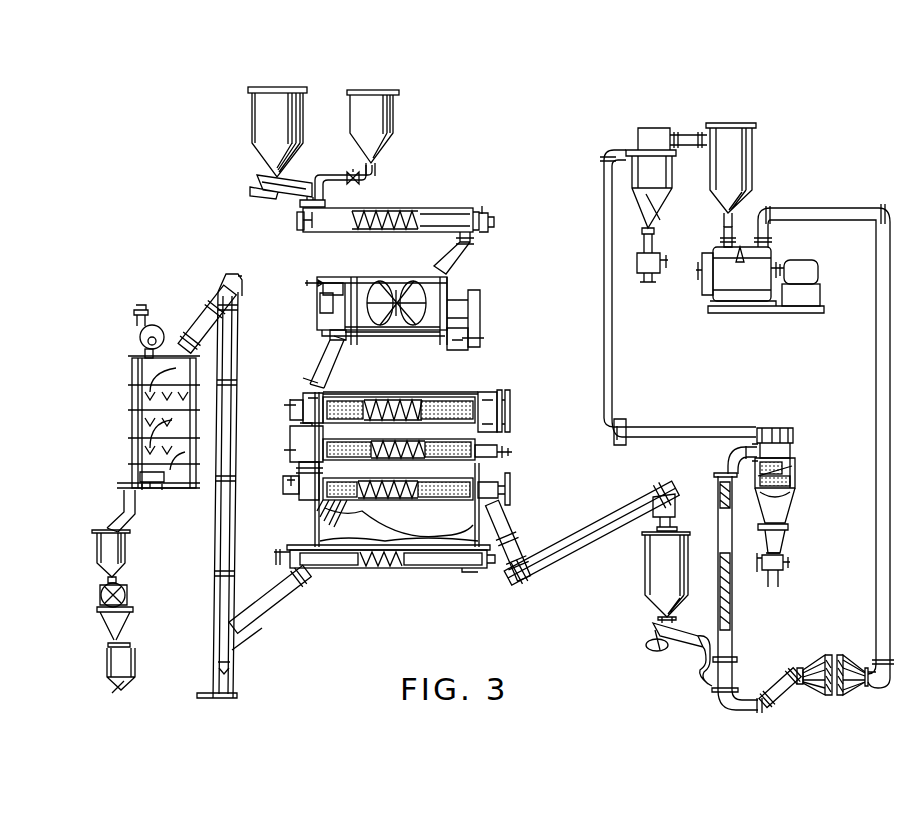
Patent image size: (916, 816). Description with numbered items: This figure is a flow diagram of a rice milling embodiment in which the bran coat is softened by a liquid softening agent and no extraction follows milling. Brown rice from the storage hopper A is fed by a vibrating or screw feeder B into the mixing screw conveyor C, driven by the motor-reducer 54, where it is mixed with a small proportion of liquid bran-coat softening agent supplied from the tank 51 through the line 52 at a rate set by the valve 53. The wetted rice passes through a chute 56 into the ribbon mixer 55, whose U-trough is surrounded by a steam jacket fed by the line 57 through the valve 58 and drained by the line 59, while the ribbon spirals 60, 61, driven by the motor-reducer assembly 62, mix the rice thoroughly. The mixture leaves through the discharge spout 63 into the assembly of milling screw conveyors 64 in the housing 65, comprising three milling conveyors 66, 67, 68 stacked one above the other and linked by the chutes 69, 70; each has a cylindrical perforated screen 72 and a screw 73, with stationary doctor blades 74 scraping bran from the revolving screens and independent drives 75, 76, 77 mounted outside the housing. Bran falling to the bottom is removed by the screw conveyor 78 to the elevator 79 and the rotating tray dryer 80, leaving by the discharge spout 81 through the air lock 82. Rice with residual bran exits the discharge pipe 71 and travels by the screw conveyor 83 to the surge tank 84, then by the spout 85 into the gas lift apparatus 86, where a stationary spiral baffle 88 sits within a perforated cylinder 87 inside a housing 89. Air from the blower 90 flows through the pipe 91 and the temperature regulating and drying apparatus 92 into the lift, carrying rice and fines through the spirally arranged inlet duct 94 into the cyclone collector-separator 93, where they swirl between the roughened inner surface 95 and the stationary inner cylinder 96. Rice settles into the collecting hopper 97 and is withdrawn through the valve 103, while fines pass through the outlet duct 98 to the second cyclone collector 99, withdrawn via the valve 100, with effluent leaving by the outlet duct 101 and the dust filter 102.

The storage hopper A is at (251, 122).
The vibrating or screw feeder B is at (315, 180).
The mixing screw conveyor C is at (323, 228).
The tank 51 is at (428, 108).
The line 52 is at (343, 172).
The valve 53 is at (350, 182).
The motor-reducer 54 is at (492, 214).
The ribbon mixer 55 is at (411, 330).
The chute 56 is at (463, 252).
The line 57 is at (306, 283).
The valve 58 is at (334, 254).
The line 59 is at (448, 343).
The ribbon spiral 60 is at (386, 278).
The ribbon spiral 61 is at (421, 280).
The motor-reducer assembly 62 is at (480, 338).
The discharge spout 63 is at (326, 358).
The assembly of milling screw conveyors 64 is at (440, 398).
The housing 65 is at (414, 392).
The milling conveyor 66 is at (304, 378).
The milling conveyor 67 is at (287, 406).
The milling conveyor 68 is at (303, 505).
The chute 69 is at (512, 452).
The chute 70 is at (300, 467).
The discharge pipe 71 is at (512, 527).
The cylindrical perforated screen 72 is at (478, 436).
The screw 73 is at (508, 426).
The doctor blades 74 is at (350, 501).
The drive 75 is at (512, 400).
The drive 76 is at (290, 447).
The drive 77 is at (510, 492).
The screw conveyor 78 is at (378, 568).
The elevator 79 is at (216, 560).
The rotating tray dryer 80 is at (131, 421).
The discharge spout 81 is at (122, 517).
The air lock 82 is at (125, 592).
The screw conveyor 83 is at (604, 522).
The surge tank 84 is at (645, 570).
The spout 85 is at (690, 652).
The gas lift apparatus 86 is at (734, 652).
The perforated cylinder 87 is at (718, 595).
The stationary spiral baffle 88 is at (768, 602).
The housing 89 is at (720, 532).
The blower 90 is at (726, 276).
The pipe 91 is at (877, 362).
The temperature regulating and drying apparatus 92 is at (846, 660).
The cyclone collector-separator 93 is at (793, 476).
The spirally arranged inlet duct 94 is at (745, 451).
The roughened inner surface 95 is at (790, 496).
The stationary inner cylinder 96 is at (793, 452).
The collecting hopper 97 is at (784, 532).
The outlet duct 98 is at (696, 427).
The second cyclone collector 99 is at (700, 168).
The valve 100 is at (658, 257).
The outlet duct 101 is at (700, 104).
The dust filter 102 is at (796, 166).
The valve 103 is at (786, 562).